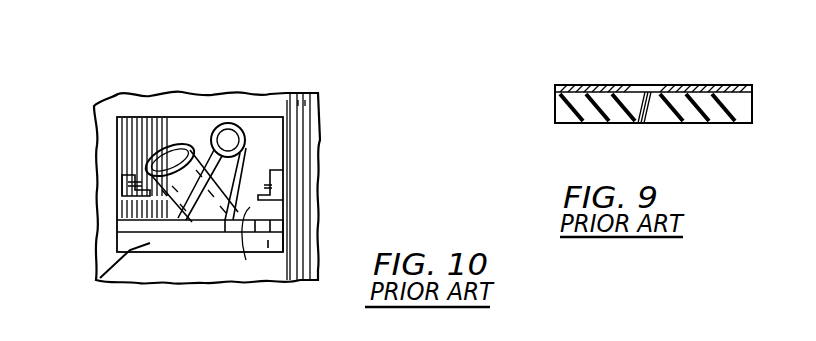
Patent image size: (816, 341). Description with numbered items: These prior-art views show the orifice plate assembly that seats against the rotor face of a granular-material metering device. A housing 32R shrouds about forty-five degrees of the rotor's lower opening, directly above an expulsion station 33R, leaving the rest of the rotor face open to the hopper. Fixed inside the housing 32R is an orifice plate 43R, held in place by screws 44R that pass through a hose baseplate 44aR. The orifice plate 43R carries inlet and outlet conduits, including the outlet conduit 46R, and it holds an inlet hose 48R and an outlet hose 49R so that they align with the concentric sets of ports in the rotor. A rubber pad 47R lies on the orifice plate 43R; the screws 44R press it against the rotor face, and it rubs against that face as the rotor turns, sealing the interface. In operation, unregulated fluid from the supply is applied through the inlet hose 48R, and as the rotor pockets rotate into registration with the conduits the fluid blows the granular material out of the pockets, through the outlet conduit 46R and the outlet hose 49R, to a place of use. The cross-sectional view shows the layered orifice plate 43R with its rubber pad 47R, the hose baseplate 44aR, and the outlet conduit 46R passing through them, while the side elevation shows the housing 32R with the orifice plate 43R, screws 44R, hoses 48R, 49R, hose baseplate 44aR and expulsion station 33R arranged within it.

In FIG. 10, the housing 32R is at (283, 130).
In FIG. 10, the expulsion station 33R is at (100, 278).
In FIG. 10, the orifice plate 43R is at (135, 233).
In FIG. 9, the orifice plate 43R is at (698, 85).
In FIG. 10, the screws 44R is at (128, 174).
In FIG. 10, the hose baseplate 44aR is at (248, 215).
In FIG. 9, the hose baseplate 44aR is at (582, 85).
In FIG. 9, the outlet conduit 46R is at (648, 108).
In FIG. 9, the rubber pad 47R is at (605, 123).
In FIG. 10, the inlet hose 48R is at (229, 124).
In FIG. 10, the outlet hose 49R is at (155, 150).